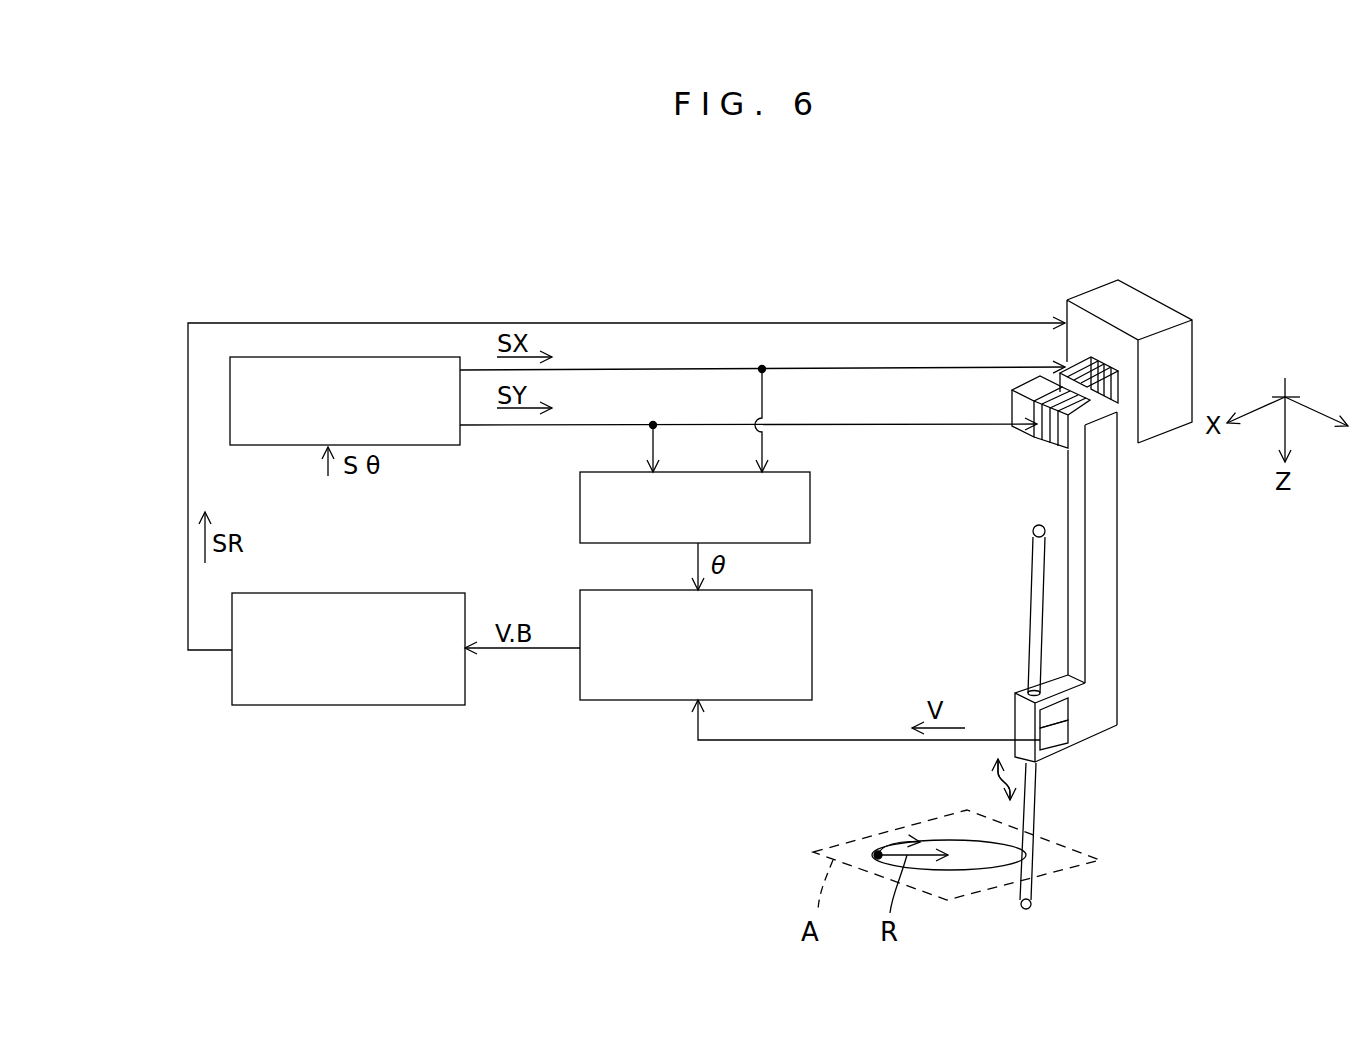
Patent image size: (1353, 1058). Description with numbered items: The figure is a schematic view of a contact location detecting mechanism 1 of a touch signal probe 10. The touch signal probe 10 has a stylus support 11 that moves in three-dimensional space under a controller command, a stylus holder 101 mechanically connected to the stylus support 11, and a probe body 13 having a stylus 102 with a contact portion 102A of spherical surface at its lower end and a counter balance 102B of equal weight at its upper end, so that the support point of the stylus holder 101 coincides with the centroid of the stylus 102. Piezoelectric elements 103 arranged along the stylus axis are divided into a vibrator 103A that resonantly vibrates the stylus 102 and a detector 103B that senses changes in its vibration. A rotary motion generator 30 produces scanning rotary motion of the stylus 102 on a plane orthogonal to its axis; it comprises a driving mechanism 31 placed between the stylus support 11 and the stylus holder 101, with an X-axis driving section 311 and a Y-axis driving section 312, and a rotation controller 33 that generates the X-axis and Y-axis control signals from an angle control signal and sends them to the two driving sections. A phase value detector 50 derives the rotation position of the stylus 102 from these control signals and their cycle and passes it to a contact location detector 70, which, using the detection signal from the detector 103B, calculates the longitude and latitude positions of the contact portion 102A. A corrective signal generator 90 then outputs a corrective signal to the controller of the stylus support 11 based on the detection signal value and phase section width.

The contact location detecting mechanism 1 is at (517, 762).
The touch signal probe 10 is at (1118, 512).
The stylus support 11 is at (1158, 311).
The probe body 13 is at (1030, 622).
The rotary motion generator 30 is at (533, 210).
The driving mechanism 31 is at (973, 263).
The rotation controller 33 is at (450, 355).
The phase value detector 50 is at (810, 500).
The contact location detector 70 is at (812, 620).
The corrective signal generator 90 is at (362, 593).
The stylus holder 101 is at (1107, 617).
The stylus 102 is at (1058, 705).
The contact portion 102A is at (1031, 905).
The counter balance 102B is at (1034, 528).
The piezoelectric elements 103 is at (1156, 718).
The vibrator 103A is at (1060, 708).
The detector 103B is at (1060, 735).
The X-axis driving section 311 is at (1060, 369).
The Y-axis driving section 312 is at (1013, 395).